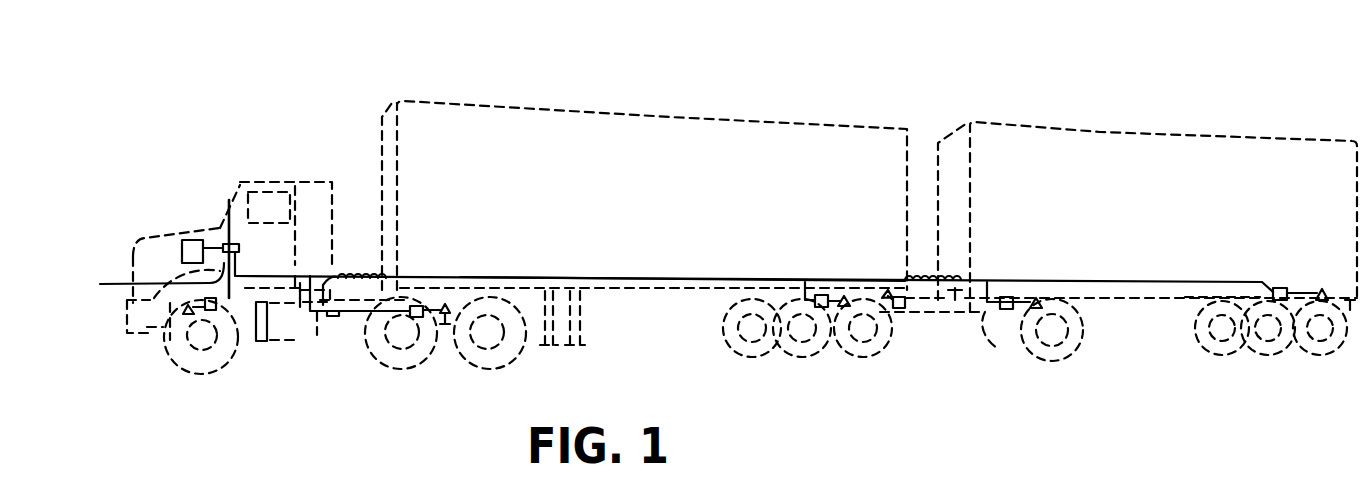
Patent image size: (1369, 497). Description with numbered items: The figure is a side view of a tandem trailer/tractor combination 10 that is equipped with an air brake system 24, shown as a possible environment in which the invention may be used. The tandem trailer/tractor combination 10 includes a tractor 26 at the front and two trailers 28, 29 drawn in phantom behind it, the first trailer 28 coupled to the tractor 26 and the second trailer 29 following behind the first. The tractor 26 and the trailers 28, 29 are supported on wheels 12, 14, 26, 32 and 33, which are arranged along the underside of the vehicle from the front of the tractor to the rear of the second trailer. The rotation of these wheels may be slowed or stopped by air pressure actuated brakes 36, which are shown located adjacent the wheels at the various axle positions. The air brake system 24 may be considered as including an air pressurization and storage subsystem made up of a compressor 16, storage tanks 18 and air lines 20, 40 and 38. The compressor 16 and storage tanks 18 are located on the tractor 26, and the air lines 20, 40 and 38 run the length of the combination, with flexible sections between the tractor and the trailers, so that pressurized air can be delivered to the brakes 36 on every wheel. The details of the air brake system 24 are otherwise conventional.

The tandem trailer/tractor combination 10 is at (433, 97).
The wheels 12 is at (168, 358).
The wheels 14 is at (400, 370).
The compressor 16 is at (663, 275).
The storage tanks 18 is at (248, 279).
The air lines 20 is at (229, 235).
The air brake system 24 is at (618, 302).
The tractor 26 is at (168, 232).
The trailer 28 is at (673, 117).
The trailer 29 is at (1143, 129).
The wheels 32 is at (1015, 372).
The wheels 33 is at (1222, 370).
The air pressure actuated brakes 36 is at (216, 310).
The air lines 38 is at (565, 278).
The air lines 40 is at (391, 277).